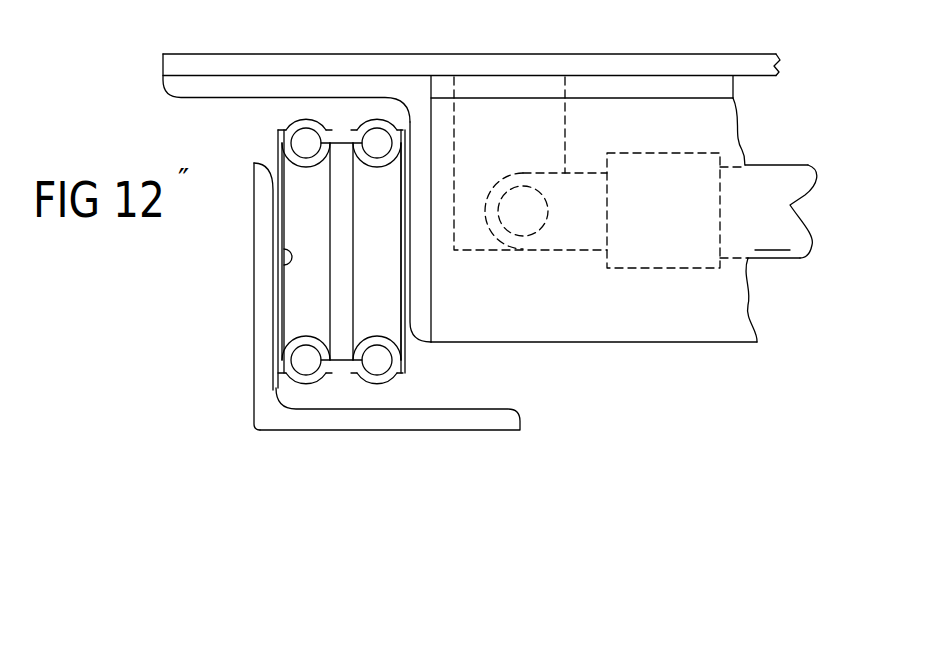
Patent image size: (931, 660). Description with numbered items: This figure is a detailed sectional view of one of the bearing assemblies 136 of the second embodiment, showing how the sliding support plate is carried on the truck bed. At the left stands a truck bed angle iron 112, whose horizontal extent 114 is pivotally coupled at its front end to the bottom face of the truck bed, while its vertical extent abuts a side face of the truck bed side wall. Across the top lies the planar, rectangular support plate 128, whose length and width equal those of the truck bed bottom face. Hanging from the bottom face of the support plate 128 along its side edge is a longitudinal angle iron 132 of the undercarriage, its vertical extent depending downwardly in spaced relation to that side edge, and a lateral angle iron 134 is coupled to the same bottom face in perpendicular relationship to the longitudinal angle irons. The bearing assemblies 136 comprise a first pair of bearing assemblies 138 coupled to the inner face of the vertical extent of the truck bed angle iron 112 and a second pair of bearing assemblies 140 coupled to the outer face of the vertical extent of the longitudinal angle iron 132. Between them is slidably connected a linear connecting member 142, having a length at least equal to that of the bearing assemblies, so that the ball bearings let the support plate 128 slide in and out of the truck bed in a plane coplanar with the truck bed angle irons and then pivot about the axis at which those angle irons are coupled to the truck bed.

The truck bed angle iron 112 is at (256, 430).
The horizontal extent 114 is at (372, 431).
The support plate 128 is at (703, 55).
The longitudinal angle iron 132 is at (207, 98).
The lateral angle iron 134 is at (710, 316).
The bearing assemblies 136 is at (273, 134).
The first pair of bearing assemblies 138 is at (282, 265).
The second pair of bearing assemblies 140 is at (410, 350).
The linear connecting member 142 is at (330, 278).